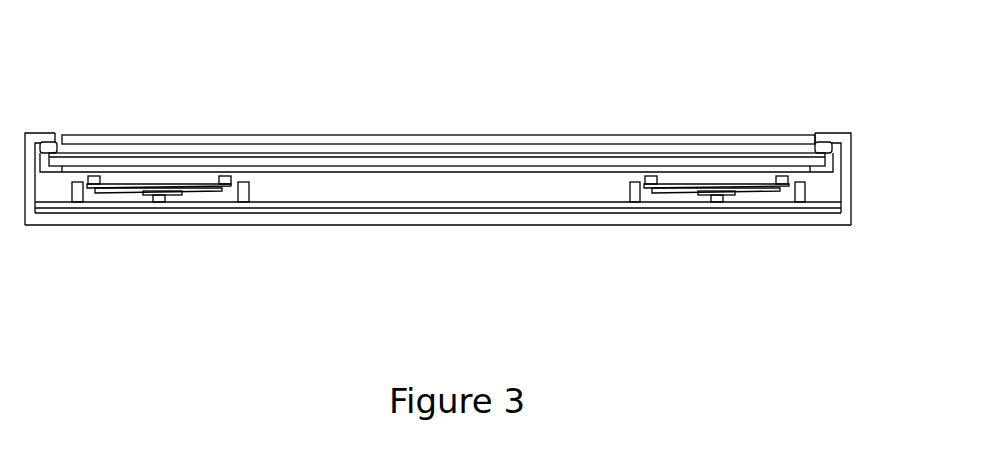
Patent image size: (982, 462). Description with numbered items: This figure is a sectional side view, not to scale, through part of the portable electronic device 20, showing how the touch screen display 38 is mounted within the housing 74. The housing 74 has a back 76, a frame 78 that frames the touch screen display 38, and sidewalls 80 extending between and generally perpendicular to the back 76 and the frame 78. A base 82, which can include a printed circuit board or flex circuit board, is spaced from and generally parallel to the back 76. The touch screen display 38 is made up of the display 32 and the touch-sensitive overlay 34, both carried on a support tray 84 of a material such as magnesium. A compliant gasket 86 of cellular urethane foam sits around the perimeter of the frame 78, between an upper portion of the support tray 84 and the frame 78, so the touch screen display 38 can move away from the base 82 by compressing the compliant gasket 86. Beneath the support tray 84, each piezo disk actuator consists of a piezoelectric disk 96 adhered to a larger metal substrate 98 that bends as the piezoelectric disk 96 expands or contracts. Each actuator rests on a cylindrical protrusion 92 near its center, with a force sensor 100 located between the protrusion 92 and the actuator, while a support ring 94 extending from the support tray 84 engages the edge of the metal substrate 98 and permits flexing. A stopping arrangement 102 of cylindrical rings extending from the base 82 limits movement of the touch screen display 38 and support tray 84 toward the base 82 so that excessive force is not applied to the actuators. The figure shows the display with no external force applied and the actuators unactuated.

The portable electronic device 20 is at (647, 46).
The display 32 is at (331, 154).
The touch-sensitive overlay 34 is at (412, 137).
The touch screen display 38 is at (152, 116).
The housing 74 is at (388, 240).
The back 76 is at (505, 217).
The frame 78 is at (49, 137).
The sidewalls 80 is at (848, 200).
The base 82 is at (262, 207).
The support tray 84 is at (828, 167).
The compliant gasket 86 is at (825, 145).
The protrusion 92 is at (160, 201).
The support ring 94 is at (228, 178).
The piezoelectric disk 96 is at (137, 192).
The metal substrate 98 is at (130, 183).
The force sensor 100 is at (148, 195).
The stopping arrangement 102 is at (78, 192).